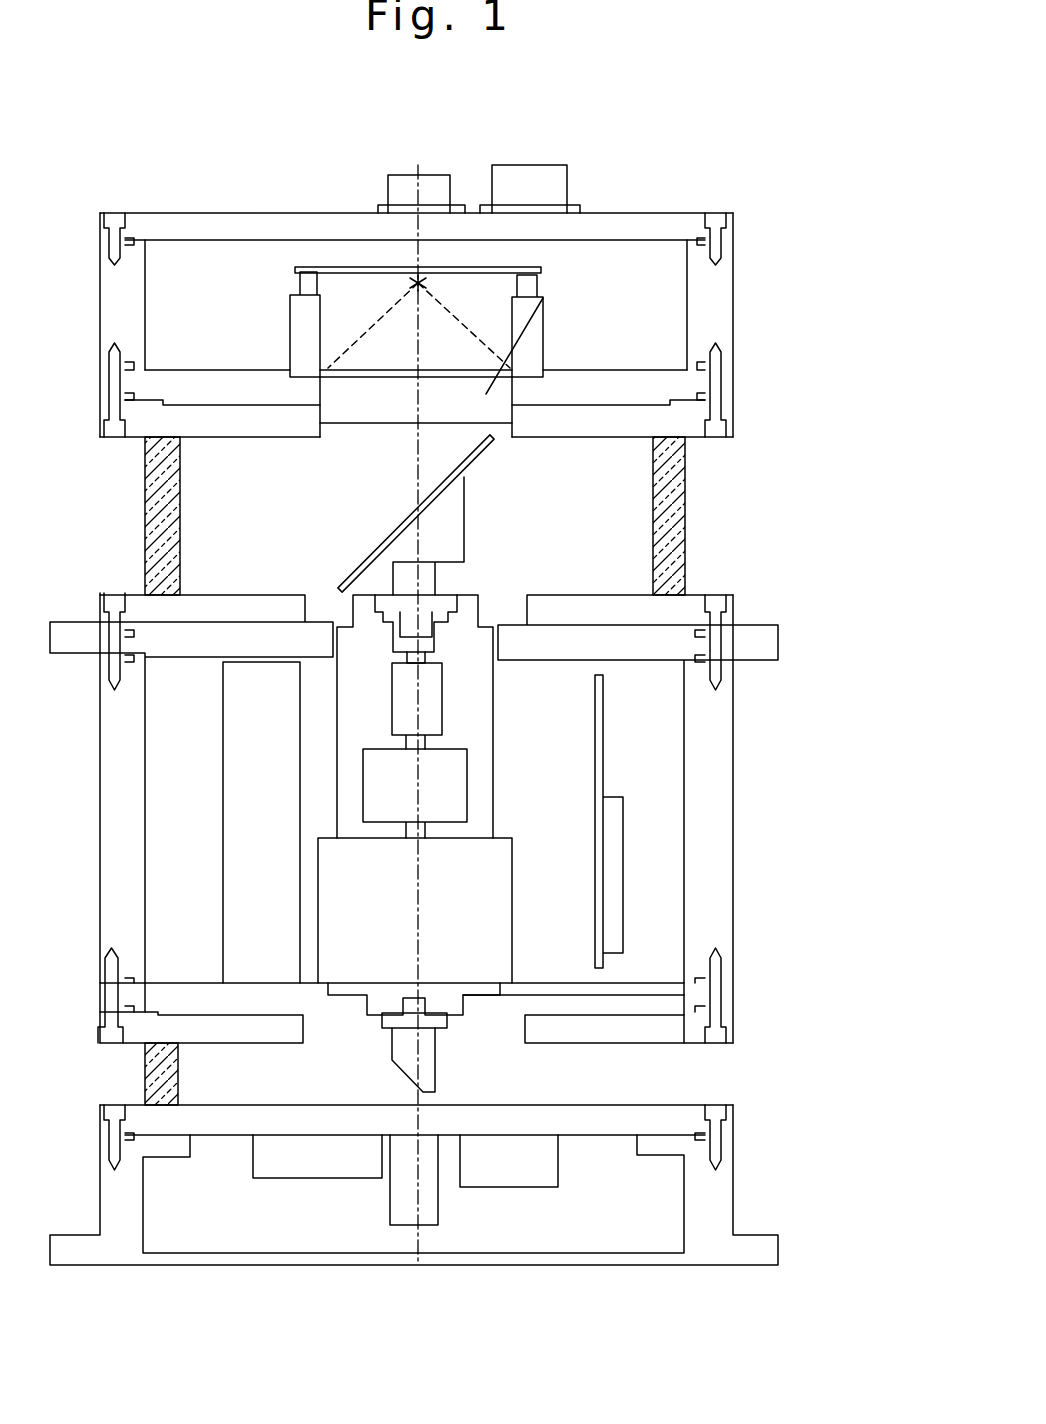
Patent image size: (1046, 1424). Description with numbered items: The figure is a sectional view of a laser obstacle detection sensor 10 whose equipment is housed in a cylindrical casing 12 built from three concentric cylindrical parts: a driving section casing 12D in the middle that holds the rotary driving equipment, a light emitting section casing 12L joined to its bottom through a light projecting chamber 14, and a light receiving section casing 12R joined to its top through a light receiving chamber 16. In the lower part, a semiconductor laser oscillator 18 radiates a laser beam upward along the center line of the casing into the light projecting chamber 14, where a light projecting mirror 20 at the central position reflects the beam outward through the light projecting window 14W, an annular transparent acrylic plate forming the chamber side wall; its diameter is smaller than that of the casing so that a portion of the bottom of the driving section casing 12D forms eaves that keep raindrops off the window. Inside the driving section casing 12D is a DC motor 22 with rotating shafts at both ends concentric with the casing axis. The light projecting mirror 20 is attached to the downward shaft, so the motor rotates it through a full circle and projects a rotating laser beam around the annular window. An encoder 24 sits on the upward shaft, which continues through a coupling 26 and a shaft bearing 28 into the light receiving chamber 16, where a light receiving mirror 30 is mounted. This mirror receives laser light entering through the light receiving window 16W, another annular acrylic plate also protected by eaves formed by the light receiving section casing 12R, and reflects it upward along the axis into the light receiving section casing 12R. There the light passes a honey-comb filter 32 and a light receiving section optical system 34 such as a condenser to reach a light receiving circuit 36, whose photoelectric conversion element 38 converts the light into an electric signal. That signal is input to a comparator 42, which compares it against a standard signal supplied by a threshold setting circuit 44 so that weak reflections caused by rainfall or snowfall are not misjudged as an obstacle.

The laser obstacle detection sensor 10 is at (697, 210).
The casing 12 is at (736, 324).
The light receiving section casing 12R is at (722, 300).
The driving section casing 12D is at (728, 760).
The light emitting section casing 12L is at (726, 1193).
The light projecting chamber 14 is at (532, 1102).
The light projecting window 14W is at (180, 1090).
The light receiving chamber 16 is at (414, 758).
The light receiving window 16W is at (166, 492).
The semiconductor laser oscillator 18 is at (403, 1225).
The light projecting mirror 20 is at (437, 1040).
The DC motor 22 is at (462, 909).
The encoder 24 is at (455, 806).
The coupling 26 is at (392, 737).
The shaft bearing 28 is at (430, 644).
The light receiving mirror 30 is at (360, 553).
The honey-comb filter 32 is at (540, 356).
The light receiving section optical system 34 is at (546, 301).
The light receiving circuit 36 is at (540, 268).
The photoelectric conversion element 38 is at (325, 310).
The comparator 42 is at (228, 790).
The threshold setting circuit 44 is at (310, 1180).